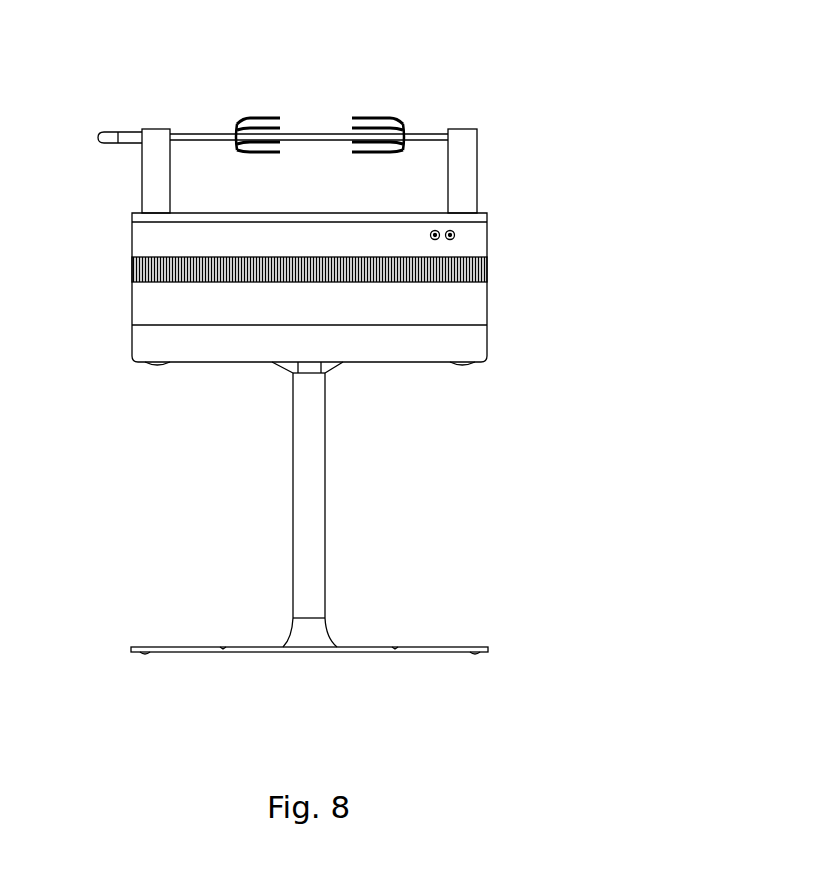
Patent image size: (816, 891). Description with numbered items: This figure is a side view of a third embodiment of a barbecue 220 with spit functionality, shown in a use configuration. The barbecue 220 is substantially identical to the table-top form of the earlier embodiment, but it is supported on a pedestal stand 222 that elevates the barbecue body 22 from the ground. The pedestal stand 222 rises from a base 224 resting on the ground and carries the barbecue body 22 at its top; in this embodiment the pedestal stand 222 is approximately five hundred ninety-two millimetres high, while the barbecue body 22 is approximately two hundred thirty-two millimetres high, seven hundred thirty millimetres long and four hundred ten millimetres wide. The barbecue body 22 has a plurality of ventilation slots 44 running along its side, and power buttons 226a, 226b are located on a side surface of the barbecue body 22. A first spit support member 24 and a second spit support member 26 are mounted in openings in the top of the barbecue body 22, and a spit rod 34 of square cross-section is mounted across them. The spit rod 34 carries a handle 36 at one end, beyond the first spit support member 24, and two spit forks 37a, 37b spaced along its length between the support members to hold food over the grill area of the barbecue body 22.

The barbecue 220 is at (550, 100).
The base 224 is at (422, 646).
The pedestal stand 222 is at (318, 470).
The barbecue body 22 is at (443, 307).
The ventilation slots 44 is at (131, 270).
The power button 226a is at (455, 234).
The power button 226b is at (437, 240).
The first spit support member 24 is at (155, 173).
The second spit support member 26 is at (463, 168).
The handle 36 is at (118, 130).
The spit rod 34 is at (321, 128).
The spit fork 37a is at (237, 123).
The spit fork 37b is at (393, 123).